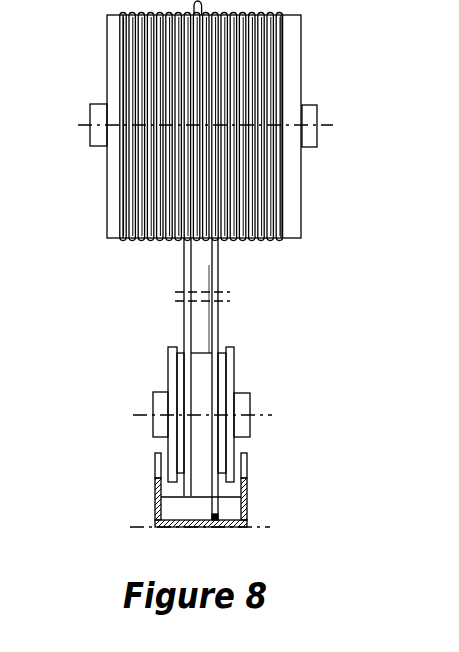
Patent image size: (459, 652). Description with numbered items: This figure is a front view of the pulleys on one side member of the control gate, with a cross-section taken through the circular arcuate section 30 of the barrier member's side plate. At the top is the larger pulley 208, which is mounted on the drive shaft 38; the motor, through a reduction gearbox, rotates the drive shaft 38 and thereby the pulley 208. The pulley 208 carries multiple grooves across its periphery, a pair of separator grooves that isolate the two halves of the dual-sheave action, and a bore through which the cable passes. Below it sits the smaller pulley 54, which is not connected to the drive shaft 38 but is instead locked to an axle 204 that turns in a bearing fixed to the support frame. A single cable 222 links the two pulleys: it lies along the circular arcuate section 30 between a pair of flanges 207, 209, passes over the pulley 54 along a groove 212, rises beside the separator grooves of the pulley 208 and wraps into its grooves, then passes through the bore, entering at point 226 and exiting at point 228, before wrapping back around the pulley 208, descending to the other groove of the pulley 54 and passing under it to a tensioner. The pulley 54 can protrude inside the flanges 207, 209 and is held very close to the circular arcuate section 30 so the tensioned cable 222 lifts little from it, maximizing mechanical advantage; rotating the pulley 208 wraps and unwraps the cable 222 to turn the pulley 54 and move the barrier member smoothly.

The pulley 208 is at (219, 127).
The drive shaft 38 is at (317, 105).
The exit point 228 is at (122, 180).
The entry point 226 is at (277, 186).
The cable 222 is at (184, 287).
The pulley 54 is at (168, 346).
The groove 212 is at (215, 374).
The axle 204 is at (154, 393).
The flange 207 is at (155, 465).
The flange 209 is at (247, 465).
The circular arcuate section 30 is at (195, 528).